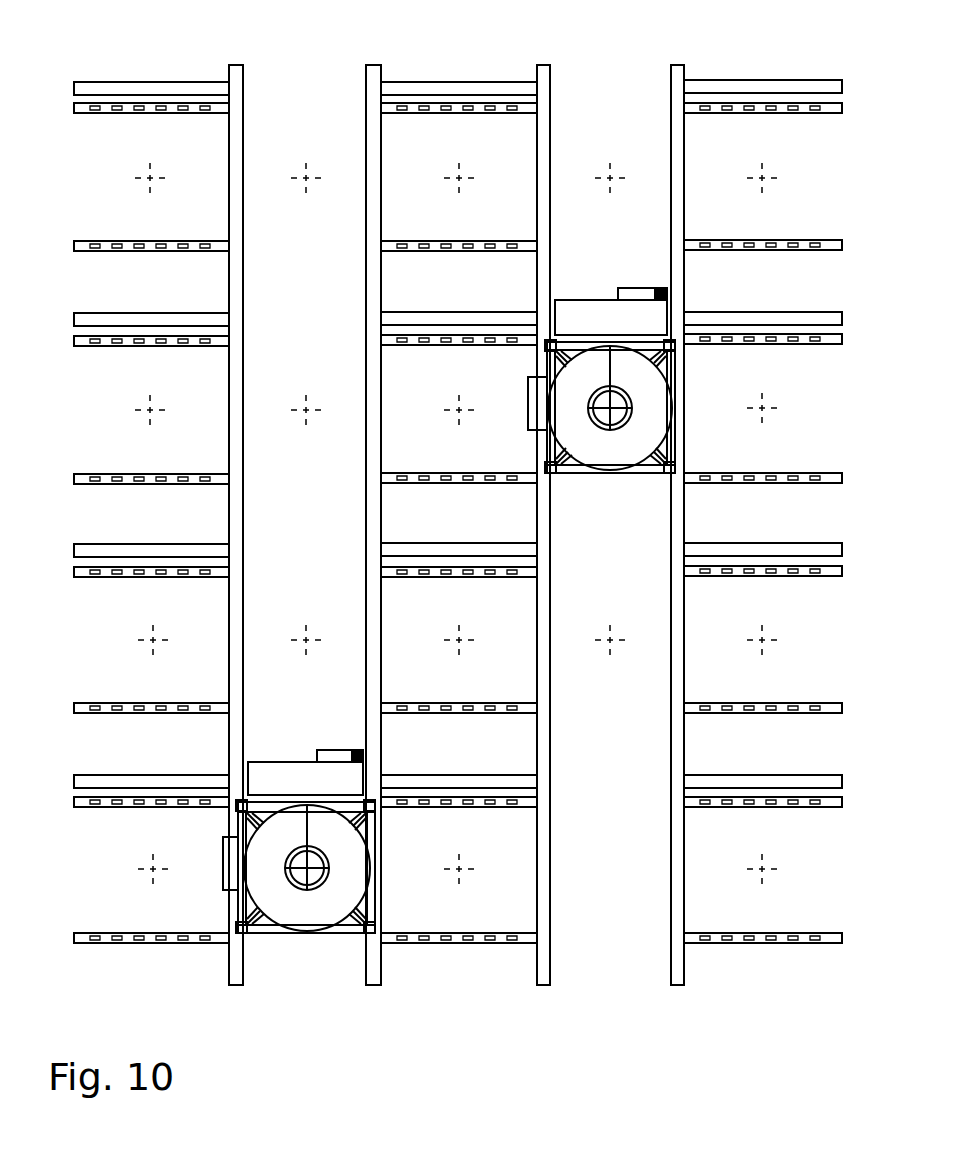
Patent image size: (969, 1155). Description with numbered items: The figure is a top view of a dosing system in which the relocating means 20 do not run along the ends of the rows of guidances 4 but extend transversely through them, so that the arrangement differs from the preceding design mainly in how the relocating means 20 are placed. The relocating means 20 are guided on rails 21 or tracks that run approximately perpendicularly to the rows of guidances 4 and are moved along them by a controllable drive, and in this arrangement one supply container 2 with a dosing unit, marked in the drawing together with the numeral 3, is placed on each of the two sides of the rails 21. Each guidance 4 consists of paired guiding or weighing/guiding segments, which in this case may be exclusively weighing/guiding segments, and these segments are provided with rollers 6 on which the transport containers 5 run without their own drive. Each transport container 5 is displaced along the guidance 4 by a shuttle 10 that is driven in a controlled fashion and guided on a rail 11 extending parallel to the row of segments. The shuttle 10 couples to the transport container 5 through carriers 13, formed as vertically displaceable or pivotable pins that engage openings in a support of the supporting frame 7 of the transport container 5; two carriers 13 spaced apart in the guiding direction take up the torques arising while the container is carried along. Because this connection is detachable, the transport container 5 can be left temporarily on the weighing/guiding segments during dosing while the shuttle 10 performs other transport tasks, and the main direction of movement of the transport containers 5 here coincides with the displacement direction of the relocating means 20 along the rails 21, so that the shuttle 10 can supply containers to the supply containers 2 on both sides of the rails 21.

The supply container 2 is at (462, 502).
The storage position marker 3 is at (148, 175).
The guidance 4 is at (198, 241).
The transport container 5 is at (588, 470).
The rollers 6 is at (770, 100).
The supporting frame 7 is at (660, 480).
The shuttle 10 is at (655, 338).
The rail 11 is at (168, 88).
The carriers 13 is at (563, 340).
The relocating means 20 is at (449, 635).
The rails 21 is at (366, 130).